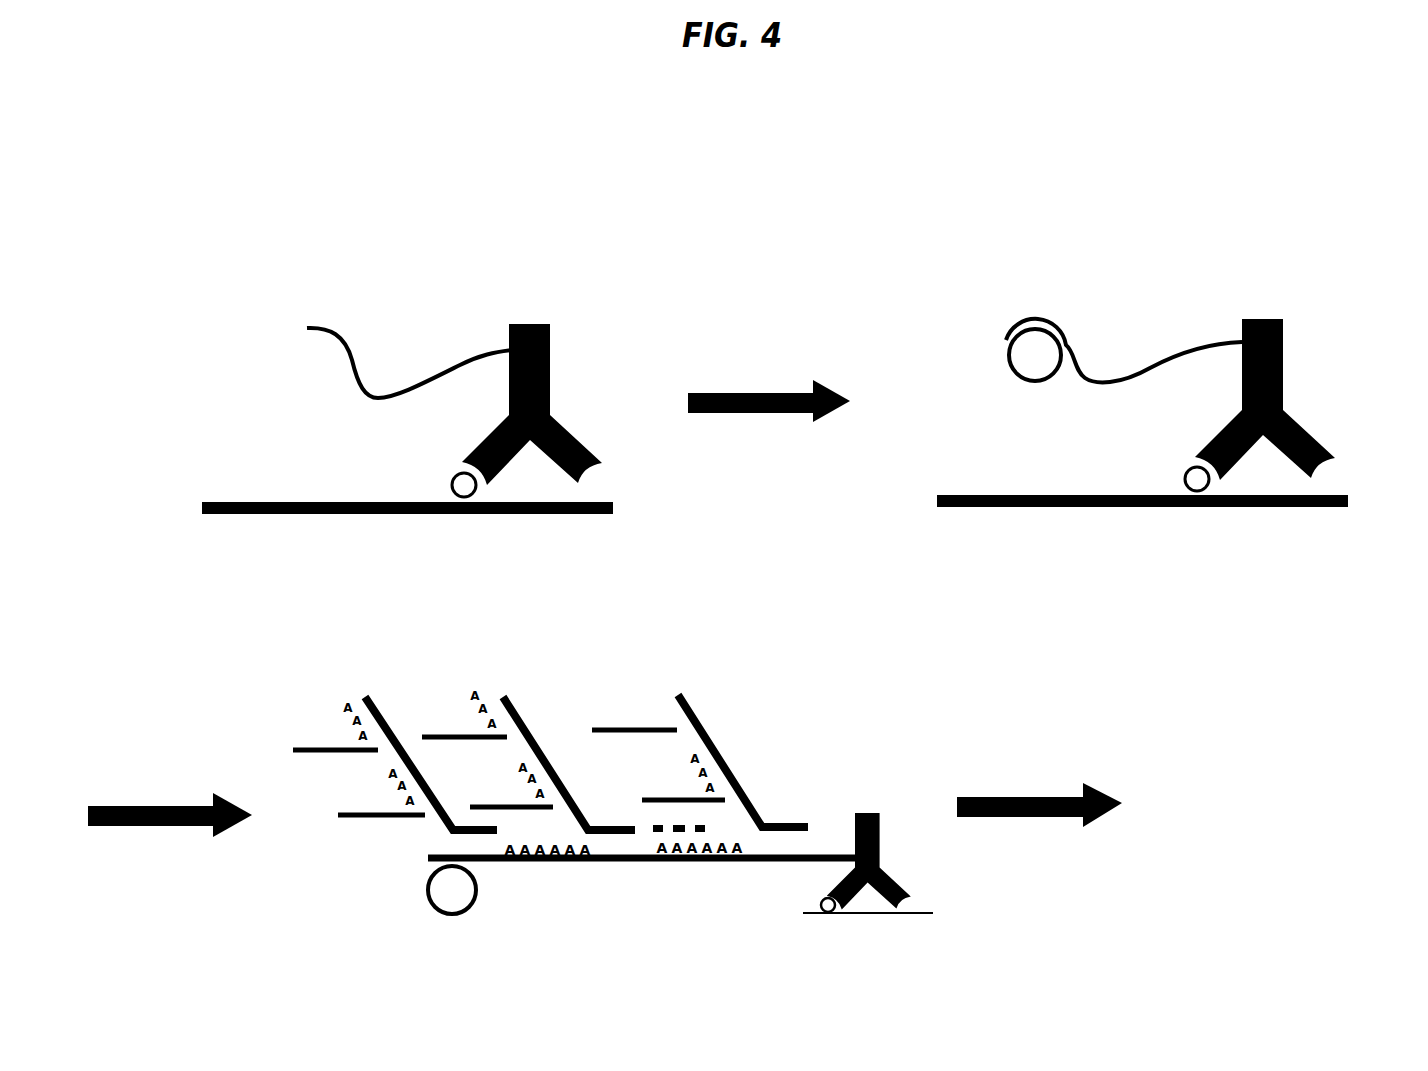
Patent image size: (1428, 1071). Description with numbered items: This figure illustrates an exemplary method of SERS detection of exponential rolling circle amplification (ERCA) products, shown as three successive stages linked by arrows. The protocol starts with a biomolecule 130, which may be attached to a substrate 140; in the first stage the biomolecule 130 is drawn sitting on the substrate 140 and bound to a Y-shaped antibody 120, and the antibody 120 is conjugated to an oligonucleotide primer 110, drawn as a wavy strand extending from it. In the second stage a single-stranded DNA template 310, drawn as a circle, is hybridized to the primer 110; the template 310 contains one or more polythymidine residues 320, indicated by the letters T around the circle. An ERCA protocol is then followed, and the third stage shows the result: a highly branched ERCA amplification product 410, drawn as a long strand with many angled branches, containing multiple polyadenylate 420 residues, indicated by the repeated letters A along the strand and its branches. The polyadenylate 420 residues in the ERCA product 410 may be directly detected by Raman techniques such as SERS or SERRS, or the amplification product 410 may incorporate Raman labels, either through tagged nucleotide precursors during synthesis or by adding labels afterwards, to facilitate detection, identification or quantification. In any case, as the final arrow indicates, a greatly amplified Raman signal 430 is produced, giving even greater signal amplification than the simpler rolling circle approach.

The oligonucleotide primer 110 is at (297, 329).
The antibody 120 is at (557, 365).
The biomolecule 130 is at (443, 482).
The substrate 140 is at (198, 510).
The single-stranded DNA template 310 is at (1124, 351).
The polythymidine residues 320 is at (990, 343).
The ERCA amplification product 410 is at (708, 715).
The polyadenylate residues 420 is at (657, 682).
The amplified Raman signal 430 is at (1282, 791).